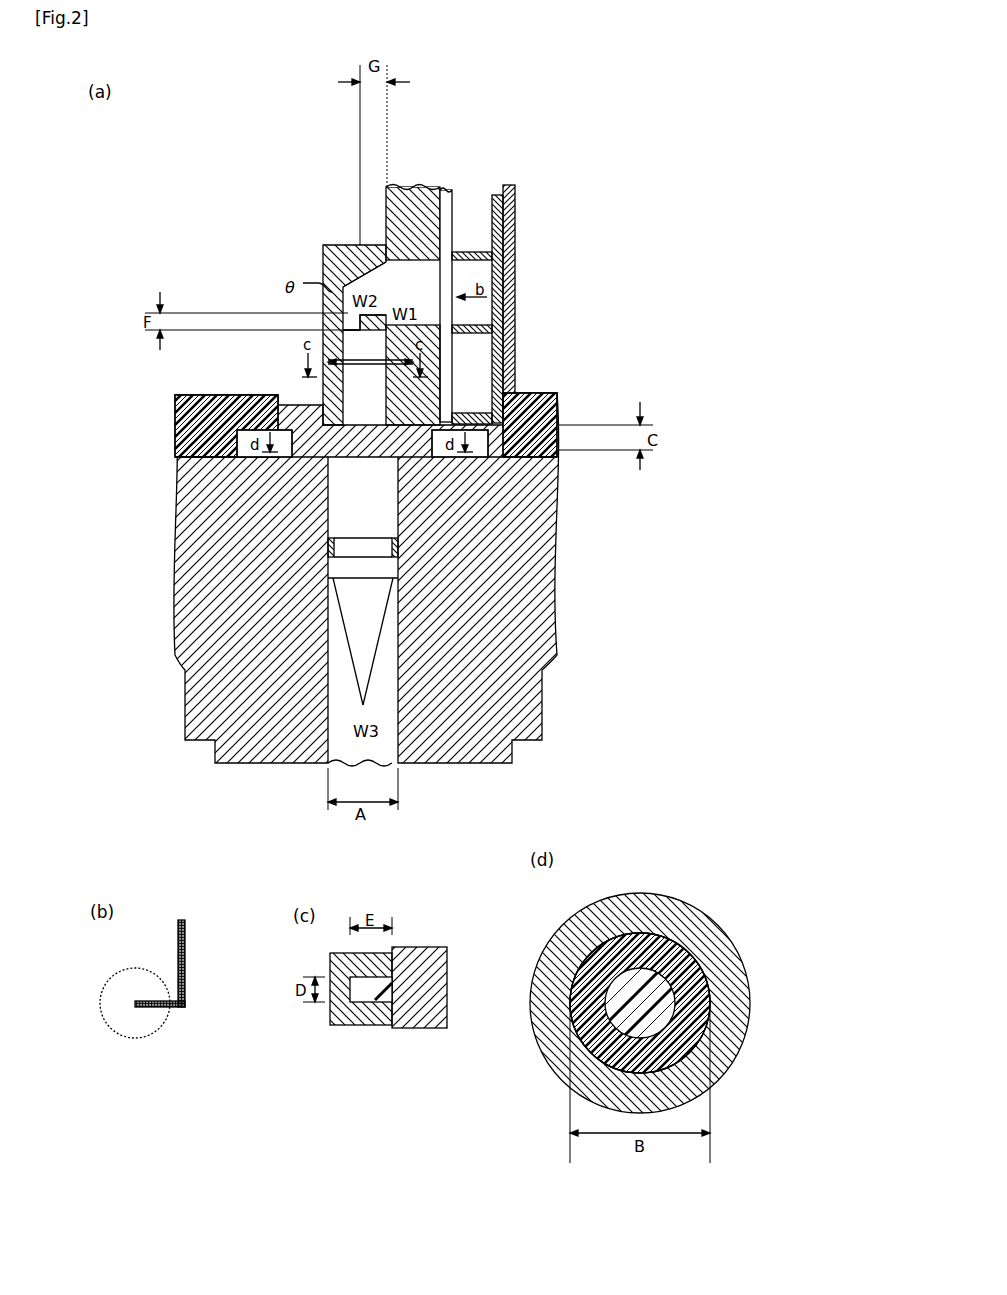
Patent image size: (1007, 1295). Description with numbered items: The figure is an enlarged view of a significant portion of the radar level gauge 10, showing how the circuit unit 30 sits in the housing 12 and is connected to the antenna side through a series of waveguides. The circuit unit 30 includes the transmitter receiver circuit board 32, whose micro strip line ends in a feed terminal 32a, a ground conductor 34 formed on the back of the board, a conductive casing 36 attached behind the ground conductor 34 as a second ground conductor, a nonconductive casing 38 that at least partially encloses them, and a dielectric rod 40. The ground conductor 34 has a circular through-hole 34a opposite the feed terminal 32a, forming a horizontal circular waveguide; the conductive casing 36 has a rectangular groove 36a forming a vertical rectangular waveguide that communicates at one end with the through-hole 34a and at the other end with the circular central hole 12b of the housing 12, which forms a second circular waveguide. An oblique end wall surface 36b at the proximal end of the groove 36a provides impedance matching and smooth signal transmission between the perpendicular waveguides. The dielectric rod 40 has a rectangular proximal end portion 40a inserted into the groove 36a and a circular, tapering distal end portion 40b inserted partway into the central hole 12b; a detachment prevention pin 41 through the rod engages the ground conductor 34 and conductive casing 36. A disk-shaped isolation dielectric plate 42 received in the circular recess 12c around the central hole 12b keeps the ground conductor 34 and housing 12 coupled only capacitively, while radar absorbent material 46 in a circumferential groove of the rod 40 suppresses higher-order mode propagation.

The injection device 10 is at (577, 188).
The housing 12 is at (693, 858).
The circular central hole 12b is at (775, 1003).
The circular recess 12c is at (543, 1100).
The circuit unit 30 is at (195, 278).
The transmitter receiver circuit board 32 is at (455, 210).
The feed terminal 32a is at (155, 1008).
The ground conductor 34 is at (403, 187).
The circular through-hole 34a is at (408, 268).
The conductive casing 36 is at (352, 258).
The rectangular groove 36a is at (308, 1013).
The oblique end wall surface 36b is at (309, 273).
The nonconductive casing 38 is at (508, 289).
The dielectric rod 40 is at (323, 490).
The proximal end portion 40a is at (358, 978).
The distal end portion 40b is at (345, 520).
The detachment prevention pin 41 is at (323, 367).
The isolation dielectric plate 42 is at (340, 393).
The radar absorbent material 46 is at (481, 534).